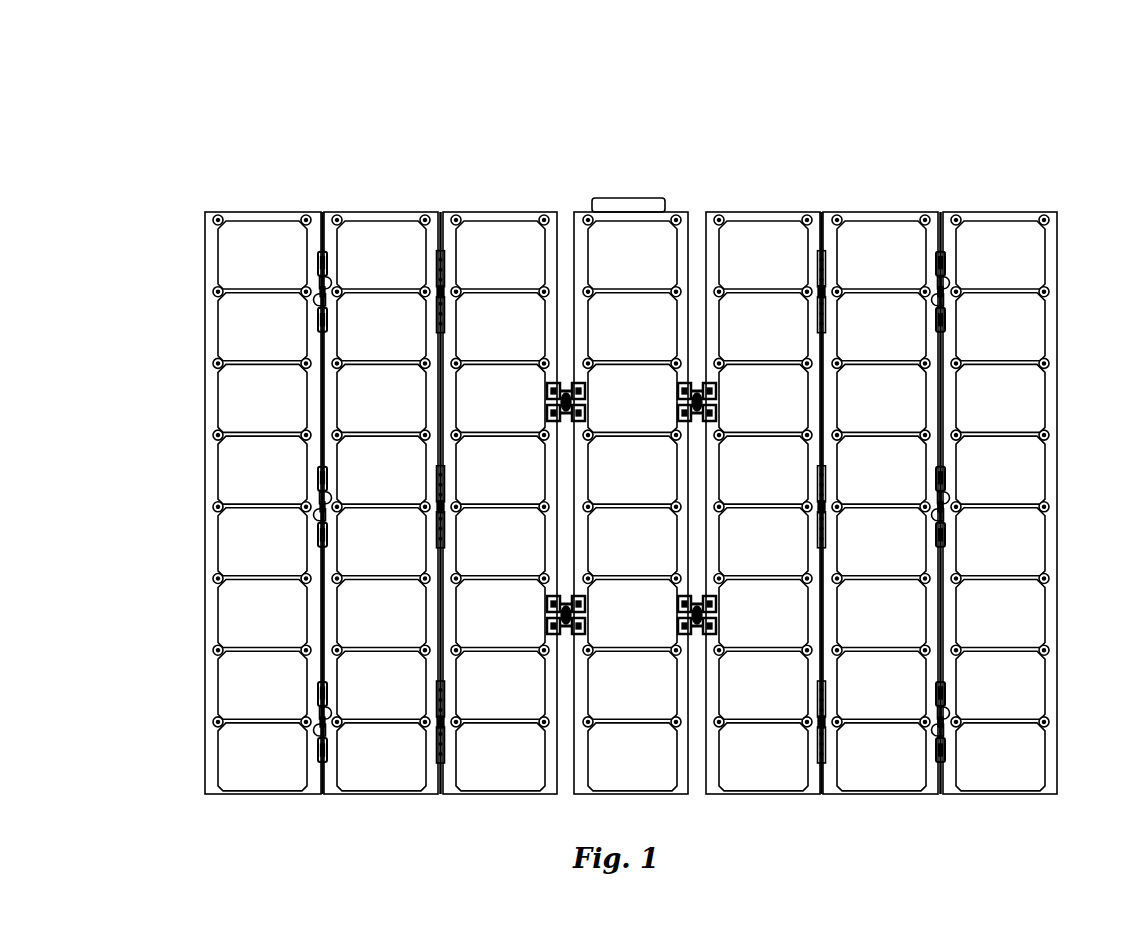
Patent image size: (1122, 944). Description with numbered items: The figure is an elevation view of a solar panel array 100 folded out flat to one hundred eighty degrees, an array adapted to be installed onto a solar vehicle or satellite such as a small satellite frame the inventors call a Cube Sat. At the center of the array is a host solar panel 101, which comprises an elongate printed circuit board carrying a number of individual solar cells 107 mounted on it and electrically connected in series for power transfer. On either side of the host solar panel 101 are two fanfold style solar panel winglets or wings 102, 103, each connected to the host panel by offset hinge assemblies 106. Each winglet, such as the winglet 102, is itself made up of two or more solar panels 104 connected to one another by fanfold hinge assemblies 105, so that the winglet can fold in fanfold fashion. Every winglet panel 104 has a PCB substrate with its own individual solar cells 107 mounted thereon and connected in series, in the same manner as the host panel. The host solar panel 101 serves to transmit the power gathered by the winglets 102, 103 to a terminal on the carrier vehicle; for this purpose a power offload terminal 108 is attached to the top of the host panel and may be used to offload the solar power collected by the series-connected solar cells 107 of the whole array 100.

The solar panel array 100 is at (797, 112).
The host solar panel 101 is at (597, 210).
The fanfold style solar panel winglet 102 is at (385, 178).
The fanfold style solar panel winglet 103 is at (887, 186).
The solar panel 104 is at (380, 210).
The fanfold hinge assembly 105 is at (438, 690).
The offset hinge assembly 106 is at (718, 625).
The solar cell 107 is at (256, 478).
The power offload terminal 108 is at (625, 200).